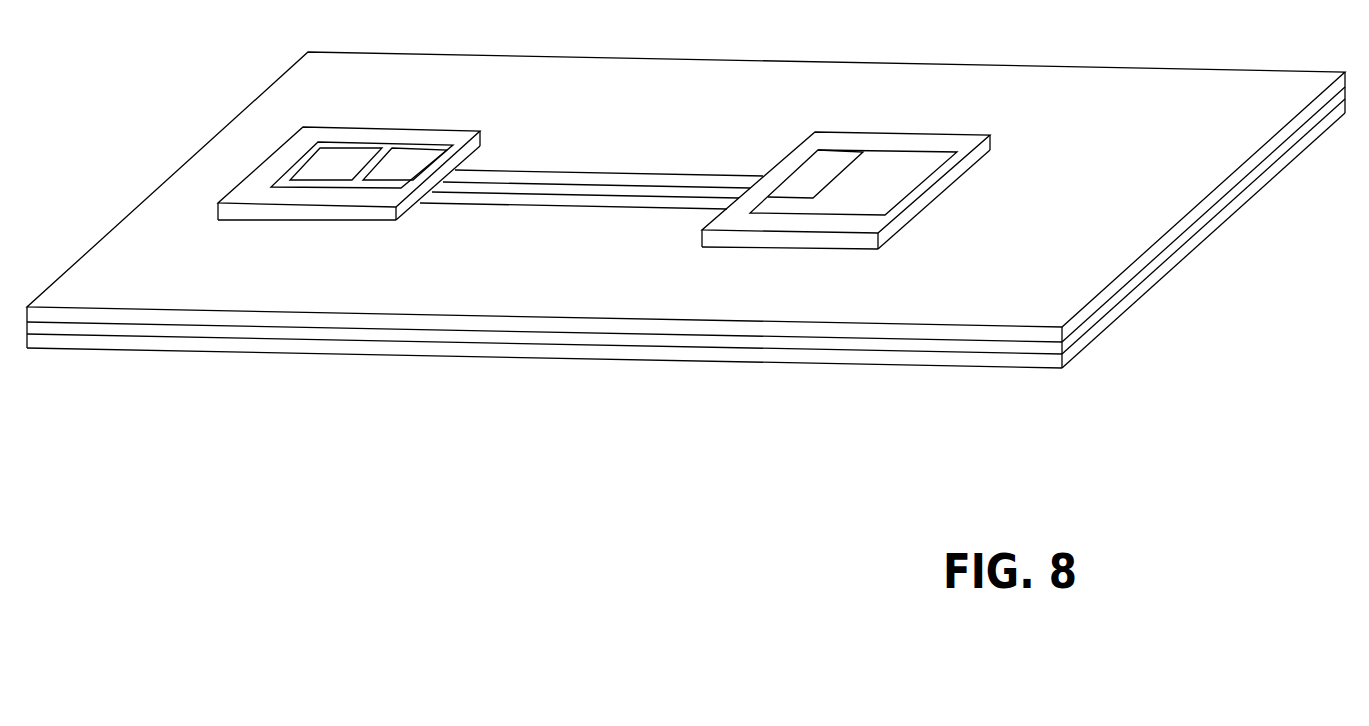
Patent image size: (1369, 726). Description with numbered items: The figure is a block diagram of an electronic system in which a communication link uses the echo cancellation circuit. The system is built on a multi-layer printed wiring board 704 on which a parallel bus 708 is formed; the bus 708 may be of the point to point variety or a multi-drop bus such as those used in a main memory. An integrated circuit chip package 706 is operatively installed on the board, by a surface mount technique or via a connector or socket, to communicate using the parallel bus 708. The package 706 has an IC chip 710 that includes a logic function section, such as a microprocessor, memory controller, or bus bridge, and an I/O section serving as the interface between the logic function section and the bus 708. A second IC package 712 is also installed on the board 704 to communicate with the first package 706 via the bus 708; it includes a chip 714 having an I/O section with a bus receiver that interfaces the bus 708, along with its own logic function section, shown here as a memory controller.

The multi-layer printed wiring board 704 is at (902, 54).
The integrated circuit chip package 706 is at (388, 128).
The parallel bus 708 is at (605, 166).
The IC chip 710 is at (287, 168).
The second IC package 712 is at (947, 133).
The chip 714 is at (843, 150).